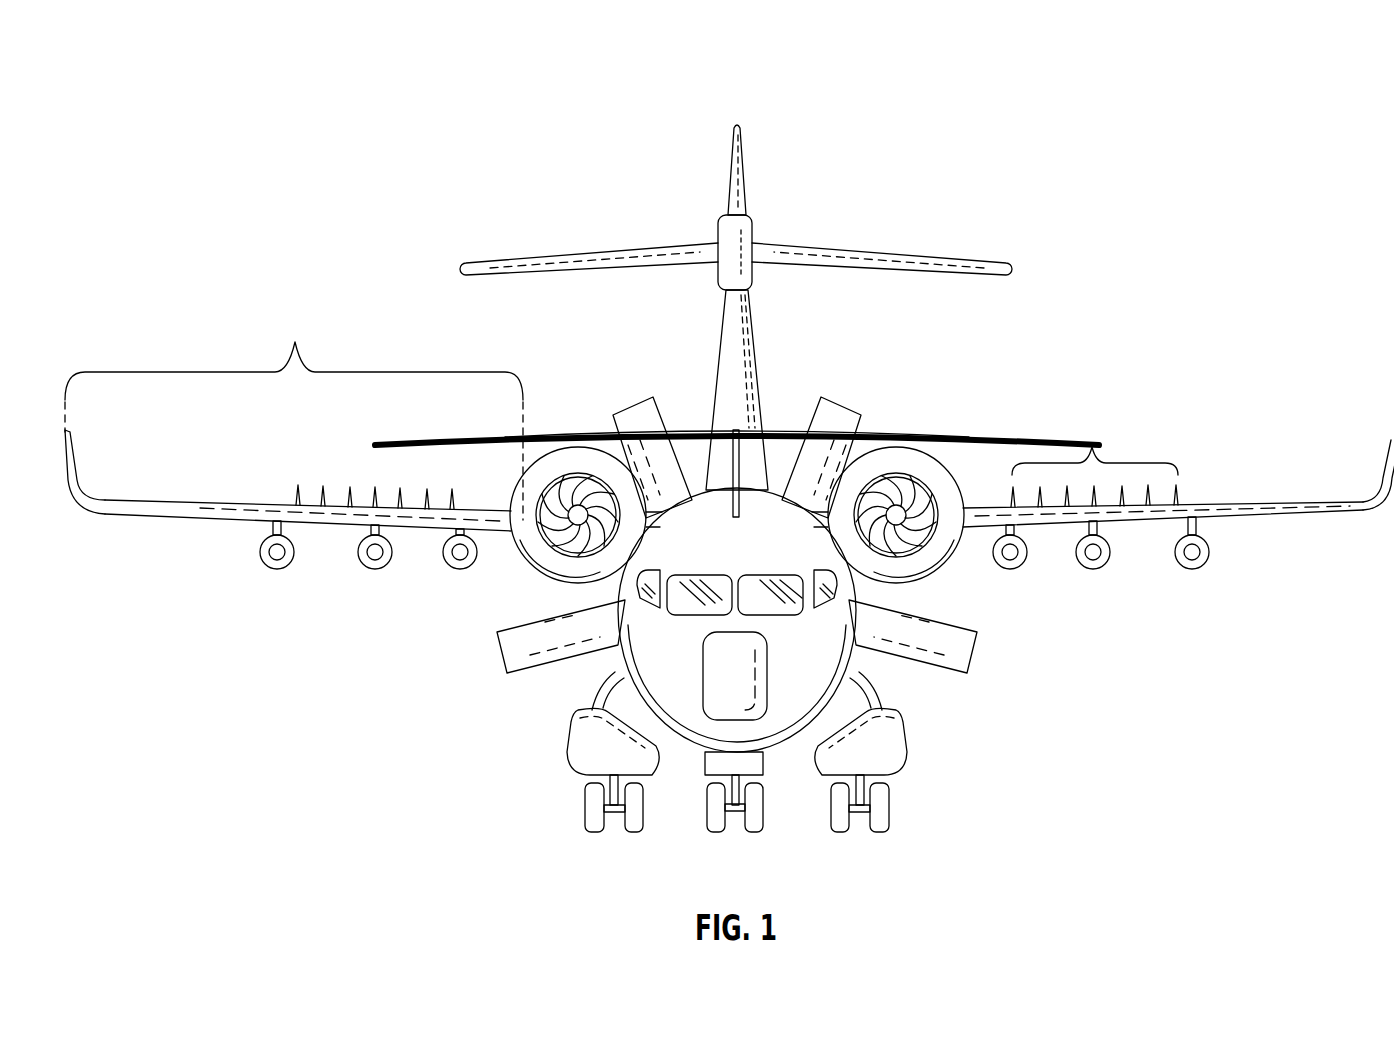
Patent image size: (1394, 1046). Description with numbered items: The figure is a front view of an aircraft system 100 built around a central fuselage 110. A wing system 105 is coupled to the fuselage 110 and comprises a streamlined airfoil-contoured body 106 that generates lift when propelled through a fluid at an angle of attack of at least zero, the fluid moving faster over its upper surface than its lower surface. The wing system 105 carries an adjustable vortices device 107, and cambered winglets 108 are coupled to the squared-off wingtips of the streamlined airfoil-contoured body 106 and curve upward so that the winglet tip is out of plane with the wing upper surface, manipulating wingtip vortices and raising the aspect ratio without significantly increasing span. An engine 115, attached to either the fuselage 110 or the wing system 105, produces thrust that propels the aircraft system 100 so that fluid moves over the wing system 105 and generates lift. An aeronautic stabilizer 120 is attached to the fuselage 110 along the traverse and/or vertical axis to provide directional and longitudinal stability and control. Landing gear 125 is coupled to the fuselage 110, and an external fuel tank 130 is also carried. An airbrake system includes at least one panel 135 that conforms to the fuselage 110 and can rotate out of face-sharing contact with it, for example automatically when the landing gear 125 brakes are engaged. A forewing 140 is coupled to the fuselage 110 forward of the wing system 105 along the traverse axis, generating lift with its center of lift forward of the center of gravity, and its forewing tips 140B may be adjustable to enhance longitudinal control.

The aircraft system 100 is at (245, 98).
The wing system 105 is at (294, 412).
The streamlined airfoil-contoured body 106 is at (165, 507).
The adjustable vortices device 107 is at (1095, 442).
The cambered winglets 108 is at (1393, 442).
The fuselage 110 is at (700, 732).
The engine 115 is at (550, 582).
The aeronautic stabilizer 120 is at (729, 175).
The landing gear 125 is at (890, 747).
The external fuel tank 130 is at (1192, 569).
The panel 135 is at (497, 660).
The forewing 140 is at (693, 433).
The forewing tips 140B is at (447, 441).